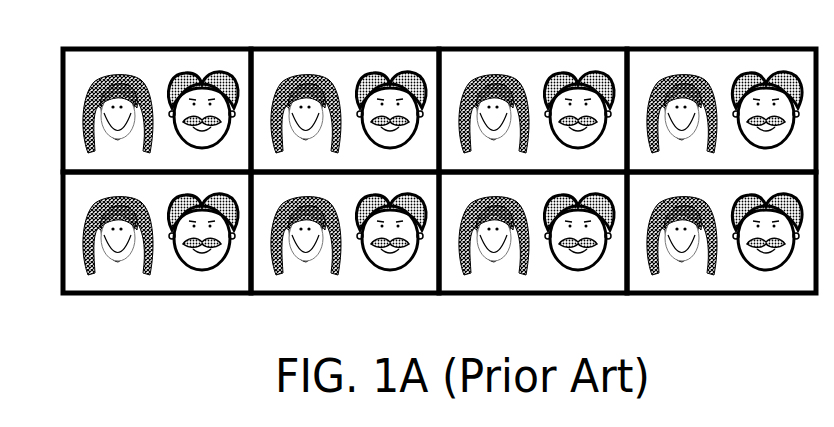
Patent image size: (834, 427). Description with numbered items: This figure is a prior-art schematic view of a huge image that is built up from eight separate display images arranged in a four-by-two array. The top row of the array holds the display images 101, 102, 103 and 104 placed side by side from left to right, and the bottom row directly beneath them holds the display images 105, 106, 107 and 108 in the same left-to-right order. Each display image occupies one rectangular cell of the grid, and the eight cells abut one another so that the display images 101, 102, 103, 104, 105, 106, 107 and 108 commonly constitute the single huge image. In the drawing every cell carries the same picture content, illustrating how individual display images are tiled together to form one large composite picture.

The display image 101 is at (80, 63).
The display image 102 is at (268, 60).
The display image 103 is at (457, 60).
The display image 104 is at (648, 65).
The display image 105 is at (98, 275).
The display image 106 is at (292, 277).
The display image 107 is at (500, 283).
The display image 108 is at (675, 283).